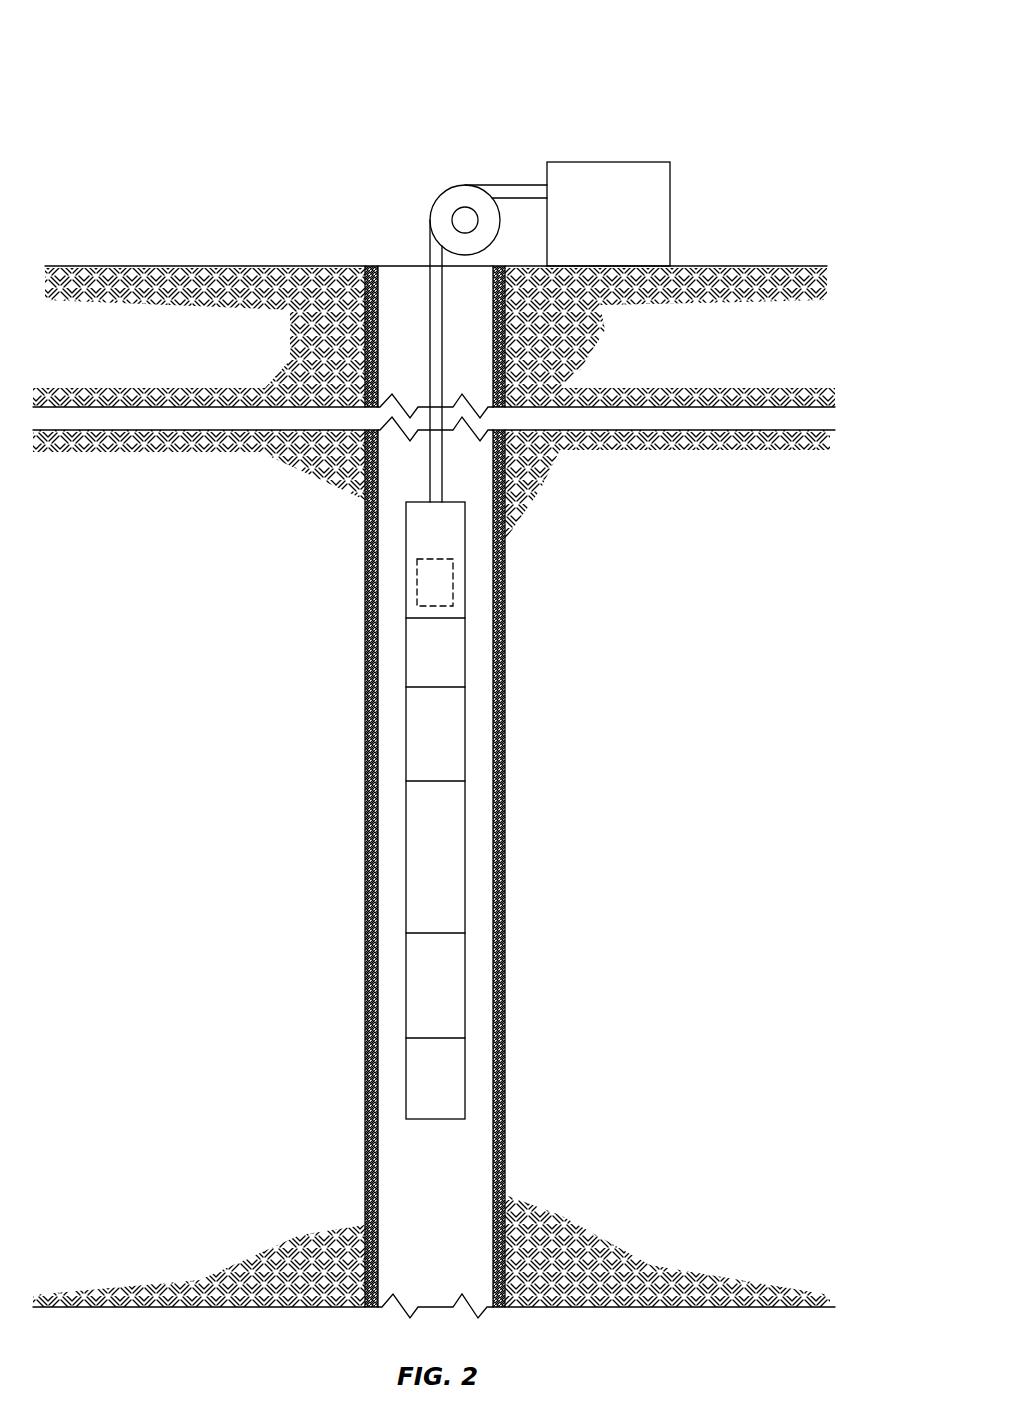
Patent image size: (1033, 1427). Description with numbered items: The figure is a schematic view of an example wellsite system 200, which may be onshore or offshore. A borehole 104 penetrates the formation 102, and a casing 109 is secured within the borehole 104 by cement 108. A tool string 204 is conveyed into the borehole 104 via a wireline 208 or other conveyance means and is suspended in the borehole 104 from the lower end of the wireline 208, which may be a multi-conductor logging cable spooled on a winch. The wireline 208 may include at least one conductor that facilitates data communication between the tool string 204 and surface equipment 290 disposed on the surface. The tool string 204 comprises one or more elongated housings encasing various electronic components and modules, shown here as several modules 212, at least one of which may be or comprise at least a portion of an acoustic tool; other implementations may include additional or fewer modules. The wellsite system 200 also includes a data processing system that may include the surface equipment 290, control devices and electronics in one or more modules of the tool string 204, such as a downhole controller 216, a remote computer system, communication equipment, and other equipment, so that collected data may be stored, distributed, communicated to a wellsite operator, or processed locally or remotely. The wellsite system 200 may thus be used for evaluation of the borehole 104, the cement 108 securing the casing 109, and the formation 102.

The wellsite system 200 is at (234, 84).
The formation 102 is at (343, 392).
The borehole 104 is at (396, 288).
The cement 108 is at (370, 680).
The casing 109 is at (370, 762).
The tool string 204 is at (440, 1152).
The wireline 208 is at (507, 183).
The modules 212 is at (406, 560).
The downhole controller 216 is at (453, 583).
The surface equipment 290 is at (670, 215).